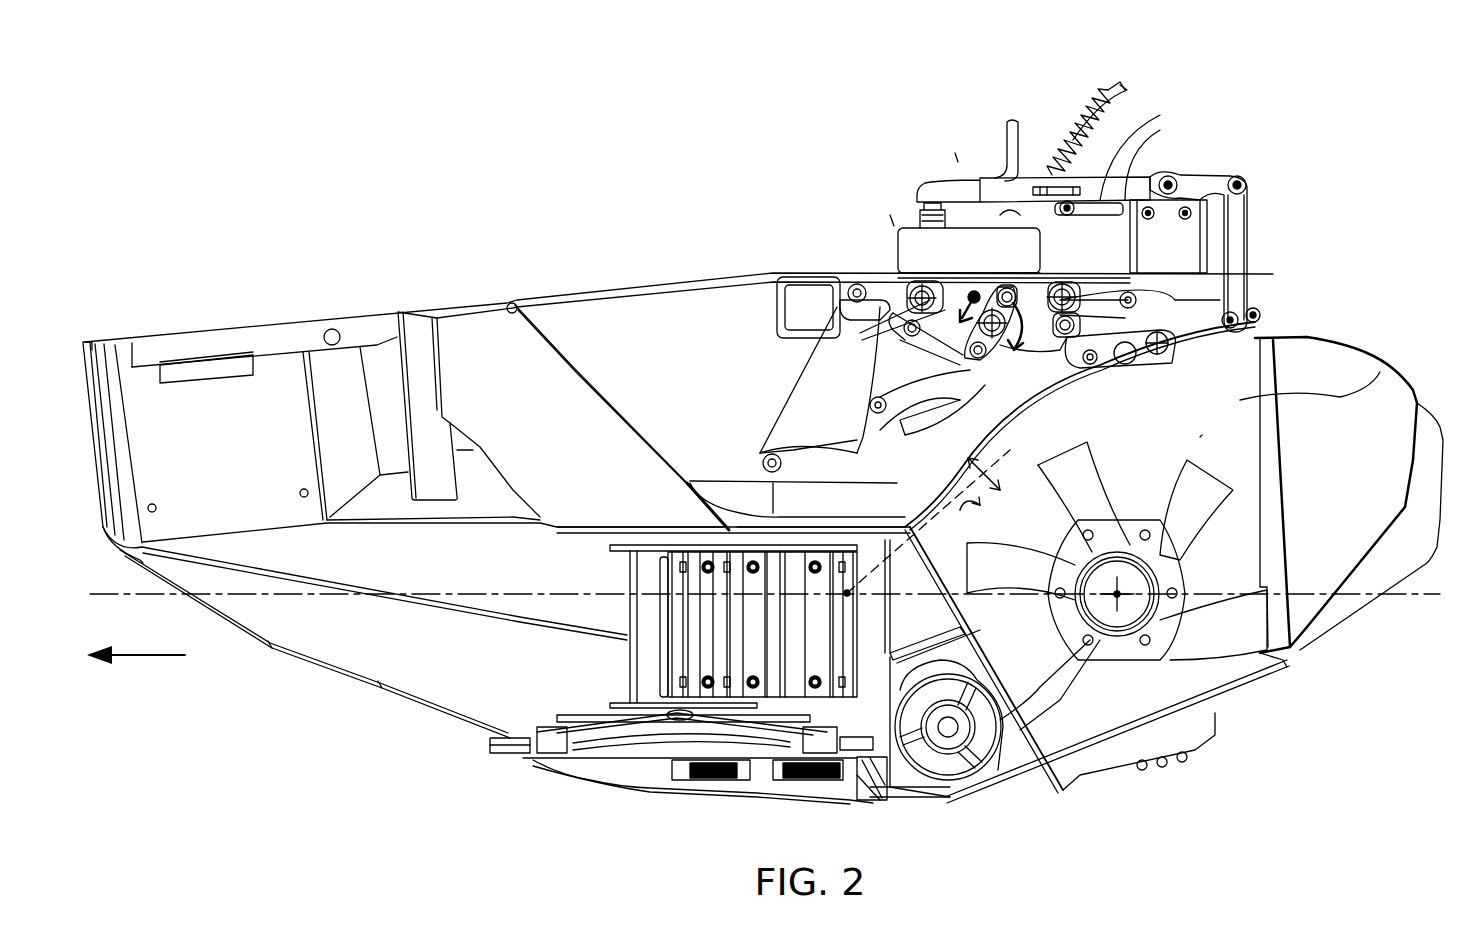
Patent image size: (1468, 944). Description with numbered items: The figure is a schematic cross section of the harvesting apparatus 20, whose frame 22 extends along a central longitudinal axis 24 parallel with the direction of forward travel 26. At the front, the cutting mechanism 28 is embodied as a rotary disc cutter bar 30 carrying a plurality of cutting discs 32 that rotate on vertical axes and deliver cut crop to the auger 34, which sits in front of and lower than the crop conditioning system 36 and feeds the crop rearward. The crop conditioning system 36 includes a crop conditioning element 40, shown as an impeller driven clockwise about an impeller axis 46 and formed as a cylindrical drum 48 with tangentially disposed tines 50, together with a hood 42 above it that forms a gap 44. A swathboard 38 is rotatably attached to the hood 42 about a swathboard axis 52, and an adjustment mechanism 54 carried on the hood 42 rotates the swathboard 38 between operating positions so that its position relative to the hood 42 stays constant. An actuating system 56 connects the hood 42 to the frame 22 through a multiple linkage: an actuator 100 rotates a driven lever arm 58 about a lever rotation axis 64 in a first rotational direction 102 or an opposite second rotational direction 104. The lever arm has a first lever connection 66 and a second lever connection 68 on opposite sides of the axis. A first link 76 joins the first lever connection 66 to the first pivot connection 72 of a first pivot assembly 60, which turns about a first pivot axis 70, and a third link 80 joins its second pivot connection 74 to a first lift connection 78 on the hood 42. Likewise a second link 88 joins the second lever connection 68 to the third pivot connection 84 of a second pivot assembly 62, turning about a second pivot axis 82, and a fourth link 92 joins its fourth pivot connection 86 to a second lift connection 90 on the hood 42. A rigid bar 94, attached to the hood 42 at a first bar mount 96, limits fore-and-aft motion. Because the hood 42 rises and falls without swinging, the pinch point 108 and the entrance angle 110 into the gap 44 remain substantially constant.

The harvesting apparatus 20 is at (310, 108).
The frame 22 is at (778, 300).
The central longitudinal axis 24 is at (1440, 598).
The direction of forward travel 26 is at (140, 658).
The cutting mechanism 28 is at (590, 786).
The rotary disc cutter bar 30 is at (690, 778).
The cutting discs 32 is at (600, 733).
The auger 34 is at (950, 797).
The crop conditioning system 36 is at (1380, 372).
The swathboard 38 is at (1290, 327).
The crop conditioning element 40 is at (1163, 623).
The hood 42 is at (975, 520).
The gap 44 is at (993, 460).
The impeller axis 46 is at (1100, 637).
The cylindrical drum 48 is at (1120, 553).
The tines 50 is at (1240, 487).
The swathboard axis 52 is at (1200, 437).
The adjustment mechanism 54 is at (1225, 156).
The actuating system 56 is at (885, 265).
The driven lever arm 58 is at (988, 273).
The first pivot assembly 60 is at (857, 285).
The second pivot assembly 62 is at (1105, 280).
The lever rotation axis 64 is at (967, 280).
The first lever connection 66 is at (925, 415).
The second lever connection 68 is at (1017, 273).
The first pivot axis 70 is at (900, 290).
The first pivot connection 72 is at (870, 345).
The second pivot connection 74 is at (840, 300).
The first link 76 is at (900, 358).
The first lift connection 78 is at (865, 405).
The third link 80 is at (860, 333).
The second pivot axis 82 is at (1055, 273).
The third pivot connection 84 is at (1110, 358).
The fourth pivot connection 86 is at (1238, 200).
The second link 88 is at (1105, 90).
The second lift connection 90 is at (1147, 355).
The fourth link 92 is at (1150, 325).
The bar 94 is at (793, 450).
The first bar mount 96 is at (757, 460).
The actuator 100 is at (958, 162).
The first rotational direction 102 is at (1037, 363).
The second rotational direction 104 is at (895, 228).
The pinch point 108 is at (987, 510).
The entrance angle 110 is at (888, 548).